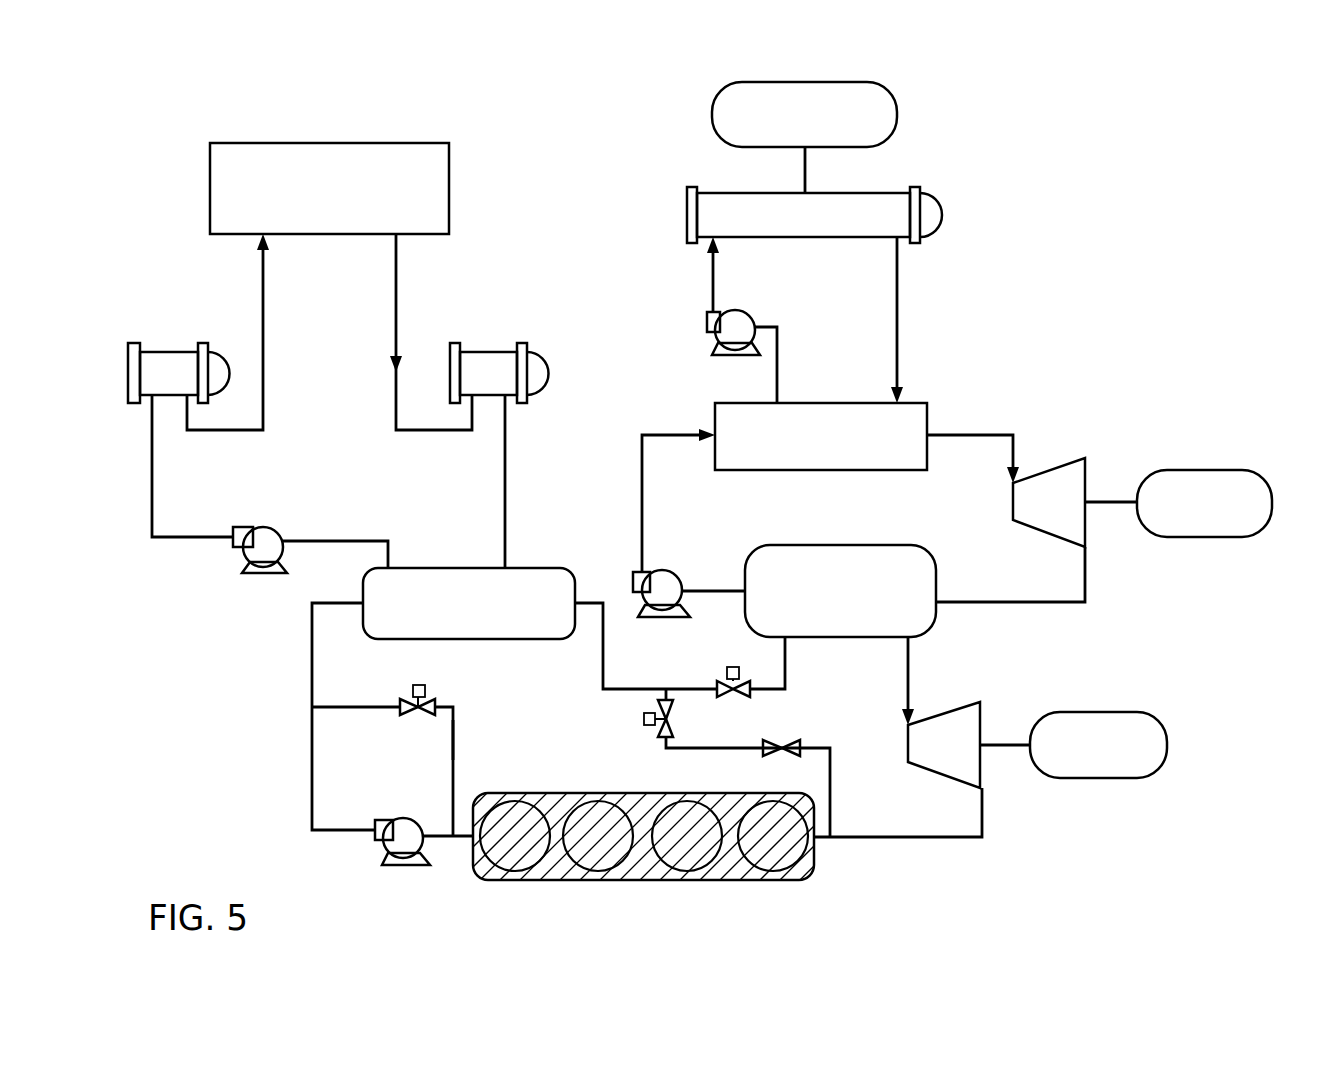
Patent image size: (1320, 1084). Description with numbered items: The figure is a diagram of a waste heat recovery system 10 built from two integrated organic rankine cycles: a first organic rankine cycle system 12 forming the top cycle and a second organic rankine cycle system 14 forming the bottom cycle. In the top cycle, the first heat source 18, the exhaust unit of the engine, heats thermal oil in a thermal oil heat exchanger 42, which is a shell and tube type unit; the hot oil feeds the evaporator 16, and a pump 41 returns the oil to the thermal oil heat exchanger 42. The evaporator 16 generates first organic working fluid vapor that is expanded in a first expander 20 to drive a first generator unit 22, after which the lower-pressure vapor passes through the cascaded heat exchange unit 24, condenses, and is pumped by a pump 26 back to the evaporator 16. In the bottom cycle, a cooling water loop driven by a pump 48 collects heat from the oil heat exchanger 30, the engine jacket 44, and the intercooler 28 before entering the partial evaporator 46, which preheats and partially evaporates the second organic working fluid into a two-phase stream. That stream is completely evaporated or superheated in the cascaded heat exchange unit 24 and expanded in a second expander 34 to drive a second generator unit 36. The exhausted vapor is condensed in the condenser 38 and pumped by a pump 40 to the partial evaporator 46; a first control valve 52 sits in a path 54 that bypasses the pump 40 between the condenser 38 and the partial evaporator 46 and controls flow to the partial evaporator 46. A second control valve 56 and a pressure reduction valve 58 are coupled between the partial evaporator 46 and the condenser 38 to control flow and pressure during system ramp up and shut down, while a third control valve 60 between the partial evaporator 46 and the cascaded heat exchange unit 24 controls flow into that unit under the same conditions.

The waste heat recovery system 10 is at (1212, 116).
The first organic rankine cycle system 12 is at (1040, 386).
The second organic rankine cycle system 14 is at (478, 903).
The evaporator 16 is at (820, 403).
The first heat source 18 is at (897, 104).
The first expander 20 is at (1035, 530).
The first generator unit 22 is at (1205, 470).
The cascaded heat exchange unit 24 is at (840, 545).
The pump 26 is at (667, 585).
The intercooler 28 is at (536, 376).
The oil heat exchanger 30 is at (214, 376).
The second expander 34 is at (950, 772).
The second generator unit 36 is at (1100, 712).
The condenser 38 is at (521, 793).
The pump 40 is at (408, 830).
The pump 41 is at (740, 325).
The thermal oil heat exchanger 42 is at (935, 200).
The engine jacket 44 is at (348, 143).
The partial evaporator 46 is at (432, 568).
The pump 48 is at (268, 545).
The first control valve 52 is at (426, 683).
The path 54 is at (454, 745).
The second control valve 56 is at (647, 727).
The pressure reduction valve 58 is at (781, 744).
The third control valve 60 is at (730, 665).